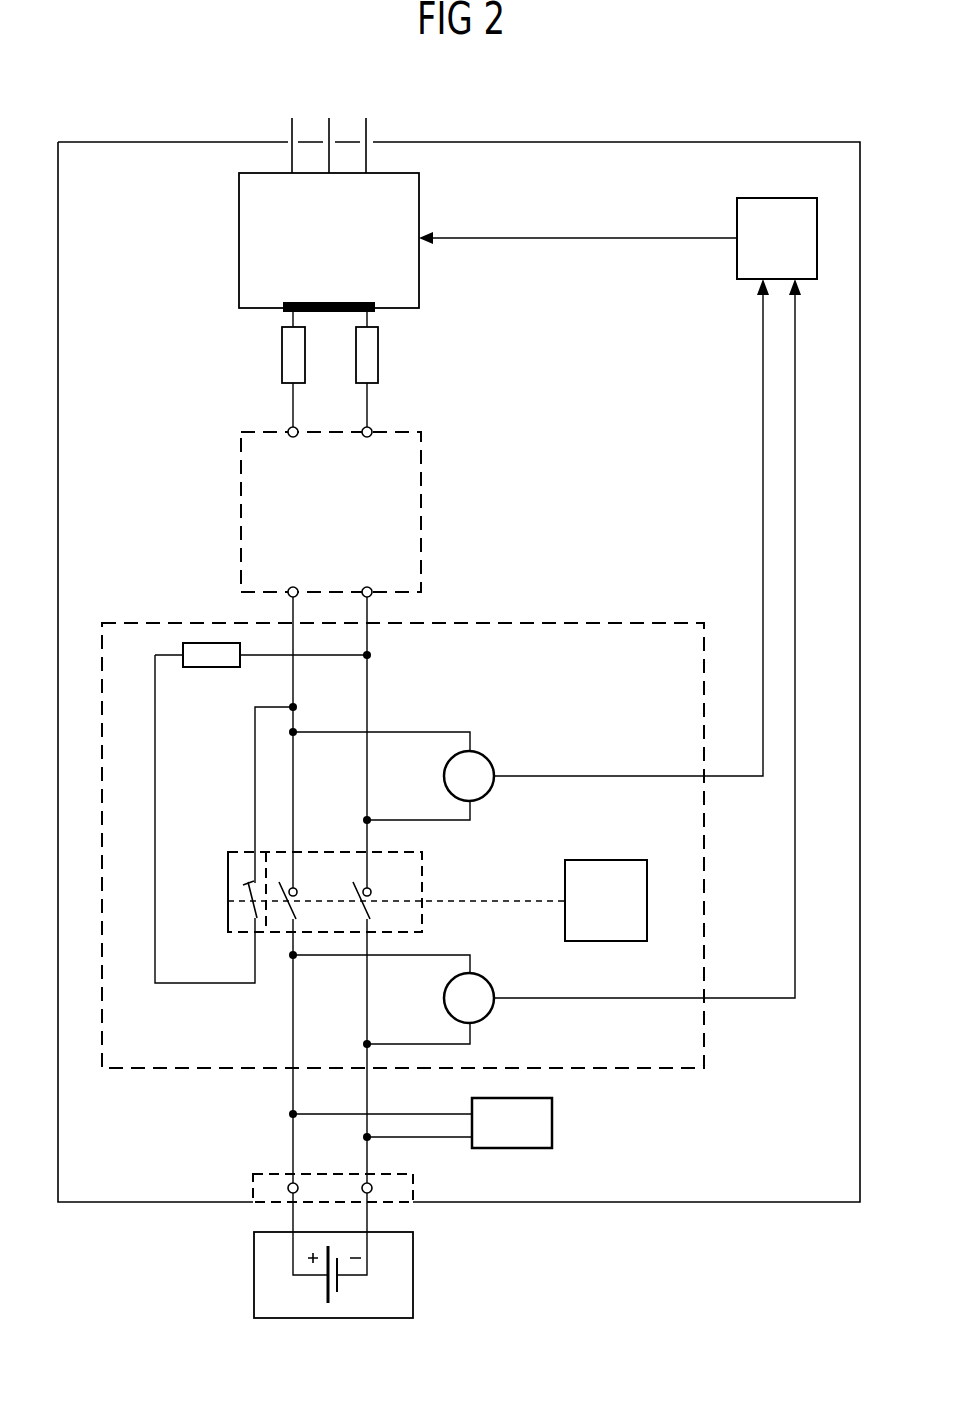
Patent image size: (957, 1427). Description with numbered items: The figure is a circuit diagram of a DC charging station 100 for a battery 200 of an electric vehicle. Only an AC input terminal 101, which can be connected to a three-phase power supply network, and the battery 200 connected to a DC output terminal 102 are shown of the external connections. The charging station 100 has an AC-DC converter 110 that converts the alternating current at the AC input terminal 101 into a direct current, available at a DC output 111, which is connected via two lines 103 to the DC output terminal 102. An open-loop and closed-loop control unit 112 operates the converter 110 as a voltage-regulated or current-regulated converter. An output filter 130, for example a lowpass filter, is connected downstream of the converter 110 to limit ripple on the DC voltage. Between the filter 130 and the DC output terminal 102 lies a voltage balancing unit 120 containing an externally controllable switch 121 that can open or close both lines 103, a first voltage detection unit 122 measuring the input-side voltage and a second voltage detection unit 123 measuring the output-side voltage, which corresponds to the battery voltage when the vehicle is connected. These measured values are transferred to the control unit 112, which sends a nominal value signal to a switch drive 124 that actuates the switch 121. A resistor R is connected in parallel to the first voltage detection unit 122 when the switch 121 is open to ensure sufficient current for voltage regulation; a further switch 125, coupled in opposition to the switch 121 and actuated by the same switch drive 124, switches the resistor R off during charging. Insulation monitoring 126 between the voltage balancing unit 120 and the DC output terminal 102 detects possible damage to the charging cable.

The DC charging station 100 is at (140, 152).
The AC input terminal 101 is at (388, 122).
The DC output terminal 102 is at (402, 1200).
The lines 103 is at (291, 403).
The AC-DC converter 110 is at (250, 242).
The DC output 111 is at (343, 300).
The open-loop and closed-loop control unit 112 is at (745, 214).
The voltage balancing unit 120 is at (625, 633).
The switch 121 is at (412, 871).
The first voltage detection unit 122 is at (490, 792).
The second voltage detection unit 123 is at (490, 1014).
The switch drive 124 is at (606, 861).
The further switch 125 is at (252, 910).
The insulation monitoring 126 is at (540, 1123).
The output filter 130 is at (410, 495).
The battery 200 is at (403, 1288).
The resistor R is at (210, 668).